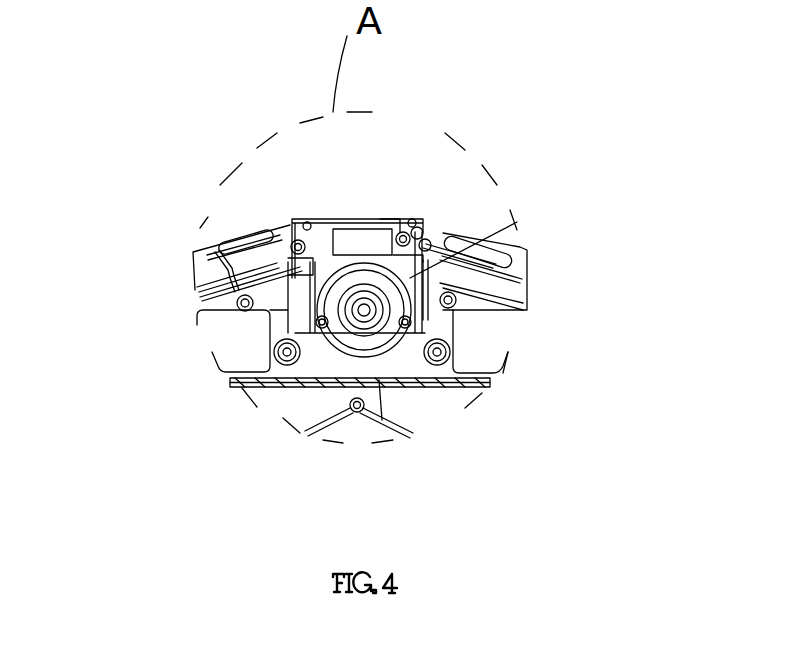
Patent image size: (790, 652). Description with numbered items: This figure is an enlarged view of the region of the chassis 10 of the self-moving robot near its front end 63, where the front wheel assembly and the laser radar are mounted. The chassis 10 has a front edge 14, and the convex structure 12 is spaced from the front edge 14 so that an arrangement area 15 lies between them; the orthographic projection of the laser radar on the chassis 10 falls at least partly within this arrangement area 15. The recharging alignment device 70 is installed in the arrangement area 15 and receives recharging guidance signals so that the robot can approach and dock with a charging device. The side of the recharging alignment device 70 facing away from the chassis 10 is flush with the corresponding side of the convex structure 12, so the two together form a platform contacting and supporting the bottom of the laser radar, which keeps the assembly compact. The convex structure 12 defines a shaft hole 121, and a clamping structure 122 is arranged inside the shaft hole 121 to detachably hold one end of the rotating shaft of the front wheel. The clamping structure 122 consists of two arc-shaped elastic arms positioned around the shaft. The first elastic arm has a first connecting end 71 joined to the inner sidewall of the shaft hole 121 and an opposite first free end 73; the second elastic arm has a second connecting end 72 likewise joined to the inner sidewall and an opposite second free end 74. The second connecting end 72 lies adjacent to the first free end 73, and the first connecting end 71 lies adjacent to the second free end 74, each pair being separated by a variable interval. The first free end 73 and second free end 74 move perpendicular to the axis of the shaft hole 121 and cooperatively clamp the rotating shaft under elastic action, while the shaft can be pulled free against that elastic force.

The chassis 10 is at (440, 412).
The convex structure 12 is at (327, 377).
The front edge 14 is at (267, 230).
The arrangement area 15 is at (305, 272).
The front end 63 is at (240, 243).
The recharging alignment device 70 is at (397, 219).
The first connecting end 71 is at (380, 387).
The second connecting end 72 is at (307, 227).
The first free end 73 is at (242, 388).
The second free end 74 is at (500, 230).
The shaft hole 121 is at (300, 370).
The clamping structure 122 is at (341, 392).